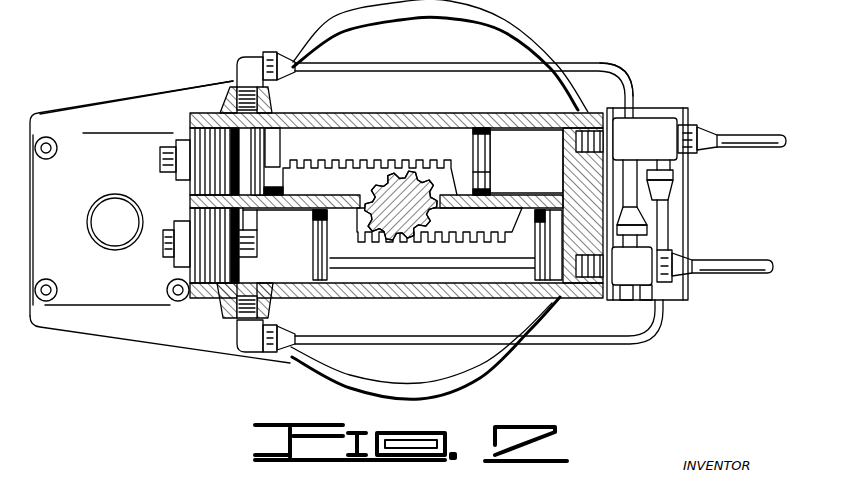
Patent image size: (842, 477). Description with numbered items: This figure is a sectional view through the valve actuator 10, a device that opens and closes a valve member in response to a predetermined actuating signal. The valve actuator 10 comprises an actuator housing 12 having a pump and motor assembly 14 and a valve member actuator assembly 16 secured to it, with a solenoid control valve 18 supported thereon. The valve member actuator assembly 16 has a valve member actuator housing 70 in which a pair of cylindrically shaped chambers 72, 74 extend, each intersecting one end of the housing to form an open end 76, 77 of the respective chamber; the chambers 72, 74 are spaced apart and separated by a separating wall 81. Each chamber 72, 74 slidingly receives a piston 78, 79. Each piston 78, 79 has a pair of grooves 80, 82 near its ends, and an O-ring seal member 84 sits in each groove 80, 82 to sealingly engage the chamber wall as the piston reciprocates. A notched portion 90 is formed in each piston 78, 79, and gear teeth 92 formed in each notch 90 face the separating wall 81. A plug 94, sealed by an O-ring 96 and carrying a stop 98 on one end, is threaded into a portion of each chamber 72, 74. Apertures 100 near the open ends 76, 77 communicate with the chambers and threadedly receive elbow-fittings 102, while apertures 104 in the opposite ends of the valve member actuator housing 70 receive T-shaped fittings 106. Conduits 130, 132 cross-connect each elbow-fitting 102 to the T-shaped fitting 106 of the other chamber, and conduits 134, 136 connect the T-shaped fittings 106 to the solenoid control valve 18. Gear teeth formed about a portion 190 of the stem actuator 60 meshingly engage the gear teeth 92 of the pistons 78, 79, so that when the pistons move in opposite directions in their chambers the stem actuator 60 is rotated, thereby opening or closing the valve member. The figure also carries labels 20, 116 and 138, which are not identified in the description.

The valve actuator 10 is at (558, 58).
The actuator housing 12 is at (499, 34).
The pump and motor assembly 14 is at (86, 133).
The valve member actuator assembly 16 is at (590, 100).
The solenoid control valve 18 is at (668, 110).
The bracket edge 20 is at (90, 126).
The stem actuator 60 is at (387, 238).
The valve member actuator housing 70 is at (447, 132).
The chamber 72 is at (398, 133).
The chamber 74 is at (285, 278).
The open end 76 is at (188, 113).
The open end 77 is at (167, 290).
The piston 78 is at (450, 133).
The piston 79 is at (443, 263).
The groove 80 is at (264, 150).
The separating wall 81 is at (241, 210).
The groove 82 is at (490, 158).
The O-ring seal member 84 is at (490, 140).
The notched portion 90 is at (300, 165).
The gear teeth 92 is at (362, 168).
The plug 94 is at (187, 126).
The O-ring 96 is at (222, 87).
The stop 98 is at (282, 112).
The aperture 100 is at (270, 110).
The elbow-fitting 102 is at (262, 55).
The aperture 104 is at (604, 160).
The T-shaped fitting 106 is at (685, 167).
The partition plate 116 is at (368, 195).
The conduit 130 is at (396, 68).
The conduit 132 is at (396, 344).
The conduit 134 is at (725, 258).
The conduit 136 is at (746, 132).
The piston seal ring 138 is at (490, 177).
The portion of the stem actuator 190 is at (313, 248).